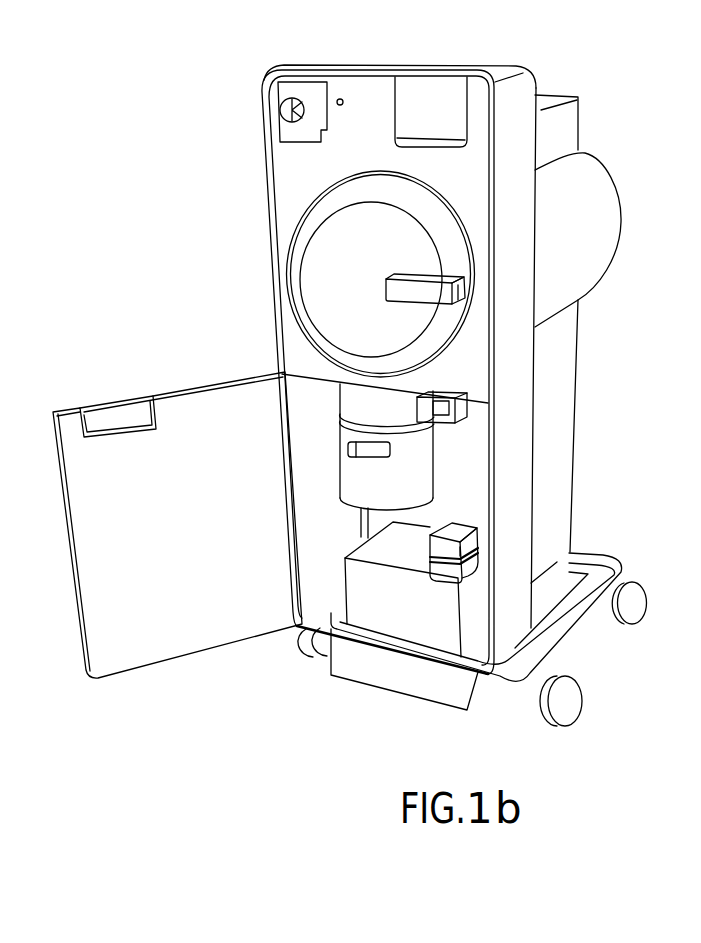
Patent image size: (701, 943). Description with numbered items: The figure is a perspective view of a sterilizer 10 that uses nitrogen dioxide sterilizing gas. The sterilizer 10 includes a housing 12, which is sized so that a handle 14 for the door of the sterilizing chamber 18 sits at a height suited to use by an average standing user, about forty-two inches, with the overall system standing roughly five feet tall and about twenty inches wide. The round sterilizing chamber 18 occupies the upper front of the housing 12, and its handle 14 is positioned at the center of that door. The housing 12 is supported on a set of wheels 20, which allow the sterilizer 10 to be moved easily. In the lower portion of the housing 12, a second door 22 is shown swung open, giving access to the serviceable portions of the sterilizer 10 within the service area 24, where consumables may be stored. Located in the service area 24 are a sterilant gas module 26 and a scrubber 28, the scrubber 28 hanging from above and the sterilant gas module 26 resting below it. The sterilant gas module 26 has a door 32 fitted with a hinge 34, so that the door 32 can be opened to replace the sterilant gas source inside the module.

The sterilizer 10 is at (163, 305).
The housing 12 is at (563, 388).
The handle 14 is at (388, 288).
The sterilizing chamber 18 is at (322, 242).
The wheels 20 is at (633, 613).
The second door 22 is at (184, 409).
The service area 24 is at (312, 564).
The sterilant gas module 26 is at (388, 618).
The scrubber 28 is at (355, 487).
The door 32 is at (480, 543).
The hinge 34 is at (453, 580).